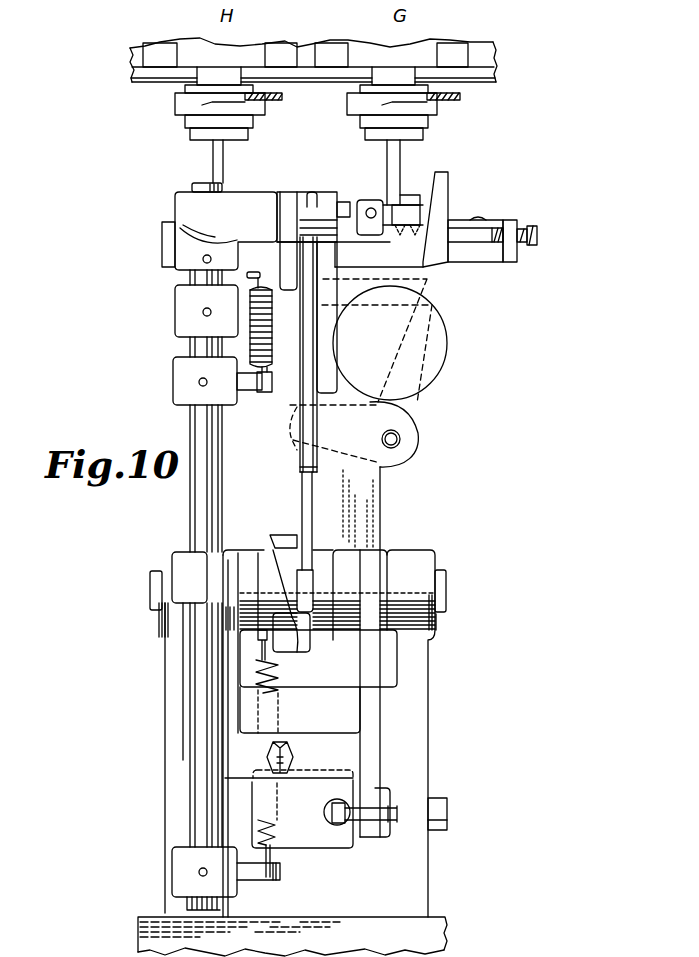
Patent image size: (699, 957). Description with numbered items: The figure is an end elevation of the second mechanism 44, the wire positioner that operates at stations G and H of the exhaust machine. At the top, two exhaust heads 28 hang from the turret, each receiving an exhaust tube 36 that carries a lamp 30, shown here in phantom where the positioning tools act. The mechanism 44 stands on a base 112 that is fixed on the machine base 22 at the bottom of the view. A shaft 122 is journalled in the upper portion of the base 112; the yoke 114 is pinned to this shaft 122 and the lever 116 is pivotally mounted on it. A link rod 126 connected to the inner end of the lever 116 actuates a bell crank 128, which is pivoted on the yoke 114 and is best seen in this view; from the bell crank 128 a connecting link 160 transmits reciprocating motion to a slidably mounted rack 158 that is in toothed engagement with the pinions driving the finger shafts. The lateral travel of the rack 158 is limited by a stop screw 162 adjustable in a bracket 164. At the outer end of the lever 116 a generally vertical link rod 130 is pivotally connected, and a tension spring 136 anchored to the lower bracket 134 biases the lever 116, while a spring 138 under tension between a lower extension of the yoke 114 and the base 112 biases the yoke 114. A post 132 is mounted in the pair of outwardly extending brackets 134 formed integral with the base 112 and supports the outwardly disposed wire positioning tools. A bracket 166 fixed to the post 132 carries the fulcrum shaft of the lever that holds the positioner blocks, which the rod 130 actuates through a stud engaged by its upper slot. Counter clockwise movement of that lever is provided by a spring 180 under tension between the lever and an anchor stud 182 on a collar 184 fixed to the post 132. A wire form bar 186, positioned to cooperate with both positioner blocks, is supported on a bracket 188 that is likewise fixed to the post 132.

The base 22 is at (403, 915).
The exhaust head 28 is at (190, 134).
The lamp 30 is at (450, 371).
The exhaust tube 36 is at (223, 158).
The second mechanism 44 is at (152, 738).
The base 112 is at (423, 668).
The yoke 114 is at (380, 502).
The lever 116 is at (292, 650).
The shaft 122 is at (448, 590).
The link rod 126 is at (297, 443).
The bell crank 128 is at (417, 410).
The link rod 130 is at (298, 398).
The post 132 is at (192, 523).
The bracket 134 is at (183, 572).
The tension spring 136 is at (275, 835).
The spring 138 is at (337, 828).
The rack 158 is at (488, 242).
The connecting link 160 is at (350, 310).
The stop screw 162 is at (537, 233).
The bracket 164 is at (510, 220).
The bracket 166 is at (195, 208).
The spring 180 is at (270, 335).
The anchor stud 182 is at (268, 375).
The collar 184 is at (174, 382).
The wire form bar 186 is at (437, 263).
The bracket 188 is at (176, 314).